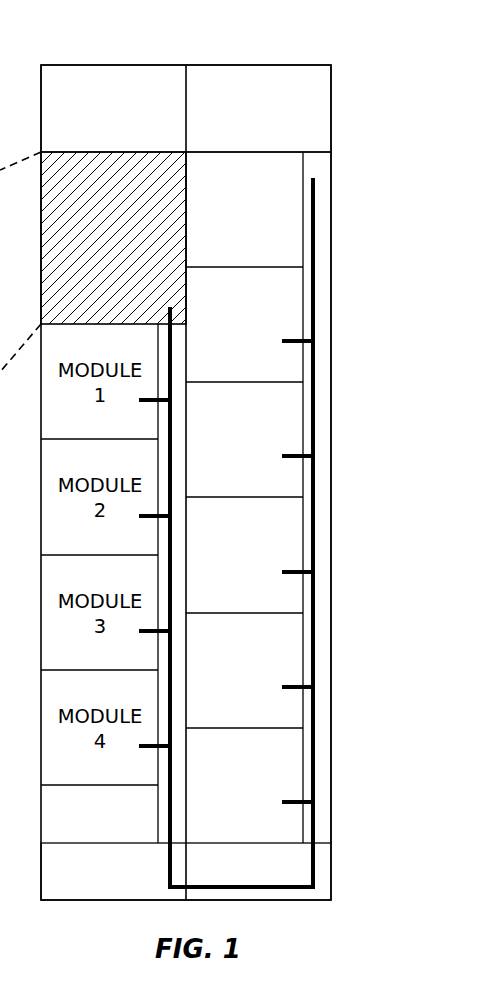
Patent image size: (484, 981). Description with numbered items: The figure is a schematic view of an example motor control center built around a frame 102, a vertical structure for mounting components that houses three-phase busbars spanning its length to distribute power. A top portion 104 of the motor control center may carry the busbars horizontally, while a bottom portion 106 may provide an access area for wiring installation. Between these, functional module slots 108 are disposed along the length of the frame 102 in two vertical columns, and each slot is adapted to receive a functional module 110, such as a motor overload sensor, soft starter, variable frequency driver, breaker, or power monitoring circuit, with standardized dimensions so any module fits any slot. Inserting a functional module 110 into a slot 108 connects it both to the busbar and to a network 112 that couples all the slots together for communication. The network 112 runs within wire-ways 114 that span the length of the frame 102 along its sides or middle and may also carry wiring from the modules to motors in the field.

The frame 102 is at (331, 85).
The top portion 104 is at (225, 73).
The bottom portion 106 is at (322, 860).
The functional module slot 108 is at (285, 152).
The functional module 110 is at (292, 175).
The network 112 is at (313, 302).
The wire-way 114 is at (321, 232).